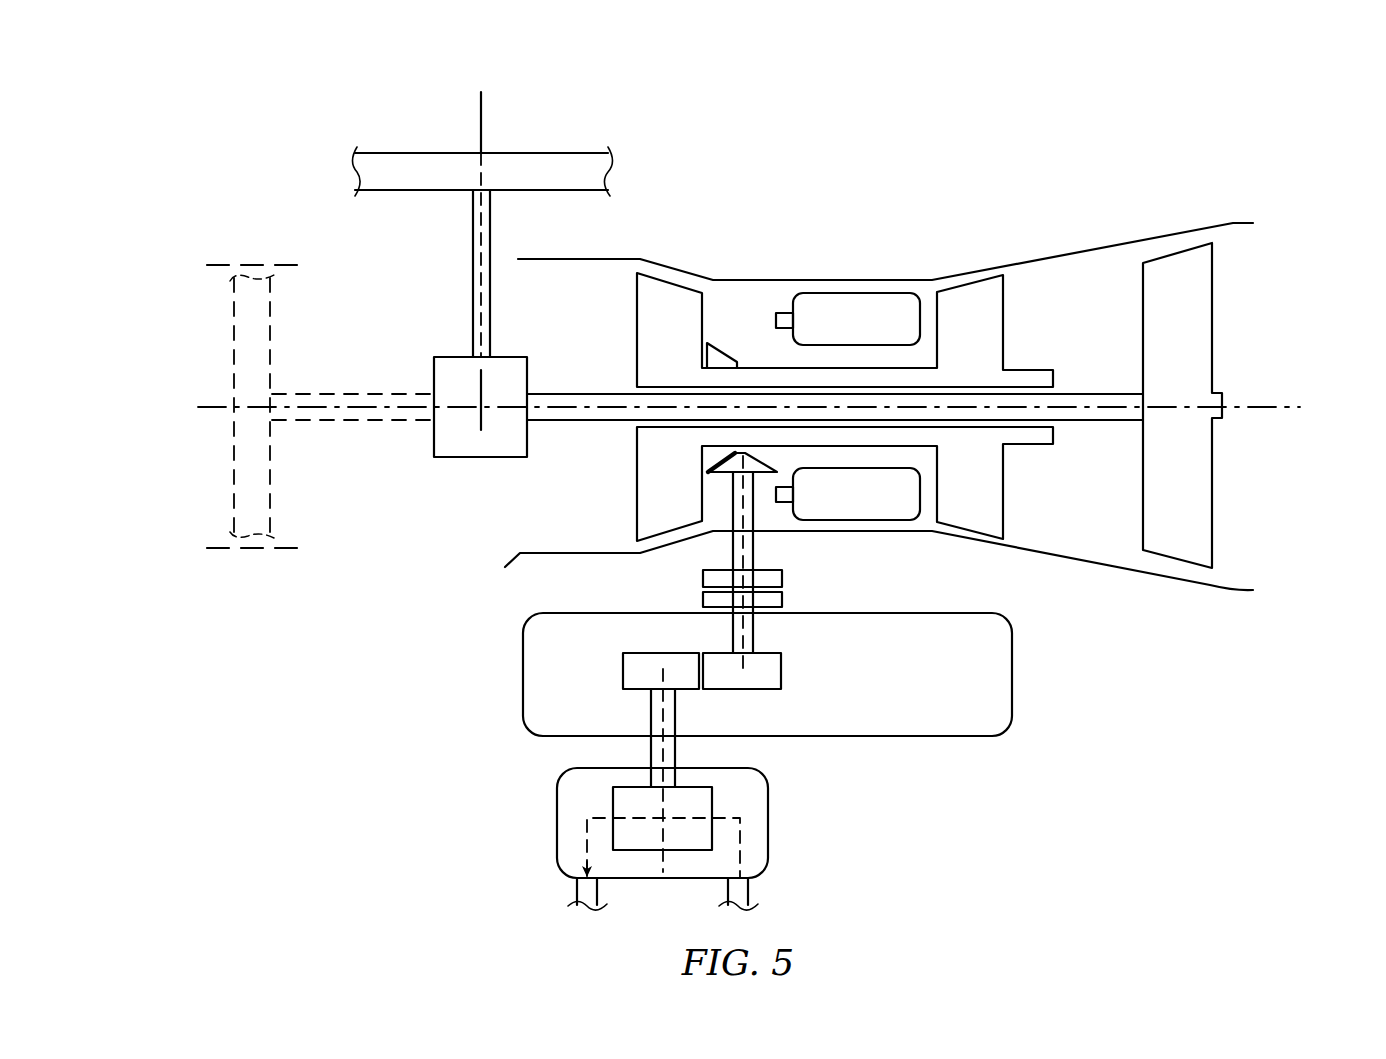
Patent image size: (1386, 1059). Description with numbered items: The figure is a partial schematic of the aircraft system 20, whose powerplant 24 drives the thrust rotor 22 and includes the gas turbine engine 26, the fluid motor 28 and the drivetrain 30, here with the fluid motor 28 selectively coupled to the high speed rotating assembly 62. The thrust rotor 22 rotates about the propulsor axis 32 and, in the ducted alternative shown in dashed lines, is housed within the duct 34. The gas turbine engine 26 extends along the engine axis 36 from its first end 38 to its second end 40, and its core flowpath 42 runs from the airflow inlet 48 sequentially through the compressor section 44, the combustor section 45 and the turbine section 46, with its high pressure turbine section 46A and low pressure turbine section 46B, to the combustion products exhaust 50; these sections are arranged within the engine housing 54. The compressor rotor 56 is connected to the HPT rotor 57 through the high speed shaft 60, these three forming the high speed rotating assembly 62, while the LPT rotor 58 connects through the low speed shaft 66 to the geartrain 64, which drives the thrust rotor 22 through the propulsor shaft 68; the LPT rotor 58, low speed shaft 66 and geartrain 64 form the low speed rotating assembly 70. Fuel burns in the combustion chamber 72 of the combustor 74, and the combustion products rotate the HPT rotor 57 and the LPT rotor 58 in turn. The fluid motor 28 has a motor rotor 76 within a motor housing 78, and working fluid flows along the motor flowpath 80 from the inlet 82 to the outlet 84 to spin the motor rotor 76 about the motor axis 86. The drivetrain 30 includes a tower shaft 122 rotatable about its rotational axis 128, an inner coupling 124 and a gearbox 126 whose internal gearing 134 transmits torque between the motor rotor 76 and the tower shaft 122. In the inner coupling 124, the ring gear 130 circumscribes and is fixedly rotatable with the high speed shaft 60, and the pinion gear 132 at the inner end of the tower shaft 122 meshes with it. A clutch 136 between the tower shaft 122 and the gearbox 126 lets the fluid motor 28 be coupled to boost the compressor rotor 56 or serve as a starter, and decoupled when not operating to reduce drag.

The aircraft system 20 is at (185, 124).
The thrust rotor 22 is at (612, 134).
The powerplant 24 is at (895, 165).
The gas turbine engine 26 is at (913, 218).
The fluid motor 28 is at (545, 853).
The drivetrain 30 is at (493, 683).
The propulsor axis 32 is at (481, 101).
The duct 34 is at (253, 263).
The engine axis 36 is at (1297, 410).
The first end 38 is at (504, 567).
The second end 40 is at (1253, 222).
The core flowpath 42 is at (549, 316).
The compressor section 44 is at (669, 261).
The combustor section 45 is at (863, 271).
The turbine section 46 is at (977, 162).
The high pressure turbine section 46A is at (985, 255).
The low pressure turbine section 46B is at (1157, 228).
The airflow inlet 48 is at (520, 508).
The combustion products exhaust 50 is at (1270, 527).
The engine housing 54 is at (731, 277).
The compressor rotor 56 is at (656, 343).
The high pressure turbine rotor 57 is at (954, 489).
The low pressure turbine rotor 58 is at (1164, 504).
The high speed shaft 60 is at (913, 368).
The high speed rotating assembly 62 is at (1028, 357).
The geartrain 64 is at (489, 444).
The low speed shaft 66 is at (1097, 393).
The propulsor shaft 68 is at (473, 291).
The low speed rotating assembly 70 is at (1225, 378).
The combustion chamber 72 is at (841, 336).
The combustor 74 is at (828, 282).
The motor rotor 76 is at (712, 803).
The motor housing 78 is at (557, 805).
The motor flowpath 80 is at (740, 845).
The inlet 82 is at (748, 885).
The outlet 84 is at (577, 885).
The motor axis 86 is at (660, 862).
The tower shaft 122 is at (733, 553).
The inner coupling 124 is at (704, 467).
The gearbox 126 is at (1012, 705).
The rotational axis 128 is at (745, 543).
The ring gear 130 is at (729, 348).
The pinion gear 132 is at (703, 451).
The internal gearing 134 is at (796, 672).
The clutch 136 is at (801, 588).